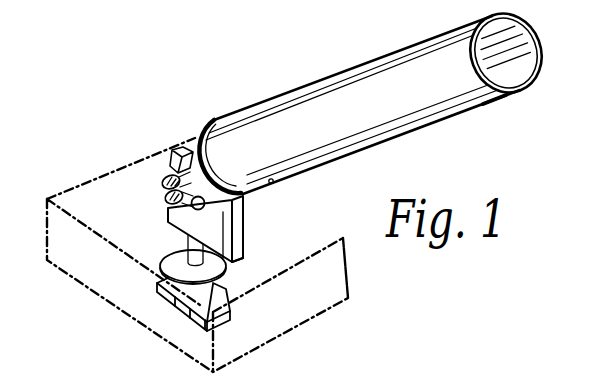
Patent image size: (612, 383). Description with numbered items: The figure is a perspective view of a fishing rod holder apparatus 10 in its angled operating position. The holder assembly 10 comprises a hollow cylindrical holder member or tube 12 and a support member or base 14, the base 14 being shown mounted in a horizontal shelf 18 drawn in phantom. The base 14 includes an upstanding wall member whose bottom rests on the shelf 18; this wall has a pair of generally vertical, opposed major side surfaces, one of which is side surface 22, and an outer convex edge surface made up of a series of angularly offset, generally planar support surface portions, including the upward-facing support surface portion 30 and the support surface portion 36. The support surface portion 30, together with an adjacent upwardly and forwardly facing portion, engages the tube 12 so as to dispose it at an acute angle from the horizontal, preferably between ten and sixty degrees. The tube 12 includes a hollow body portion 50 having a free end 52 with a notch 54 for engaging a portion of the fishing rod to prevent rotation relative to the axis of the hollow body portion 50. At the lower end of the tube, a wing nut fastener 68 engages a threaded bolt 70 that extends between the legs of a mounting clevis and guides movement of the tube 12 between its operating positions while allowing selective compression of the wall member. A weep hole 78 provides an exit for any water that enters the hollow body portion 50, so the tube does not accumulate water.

The fishing rod holder apparatus 10 is at (330, 60).
The tube 12 is at (270, 96).
The base 14 is at (250, 217).
The shelf 18 is at (355, 274).
The major side surface 22 is at (228, 264).
The support surface portion 30 is at (196, 140).
The support surface portion 36 is at (246, 237).
The hollow body portion 50 is at (406, 114).
The free end 52 is at (536, 33).
The notch 54 is at (210, 150).
The wing nut fastener 68 is at (163, 179).
The threaded bolt 70 is at (168, 201).
The weep hole 78 is at (275, 183).